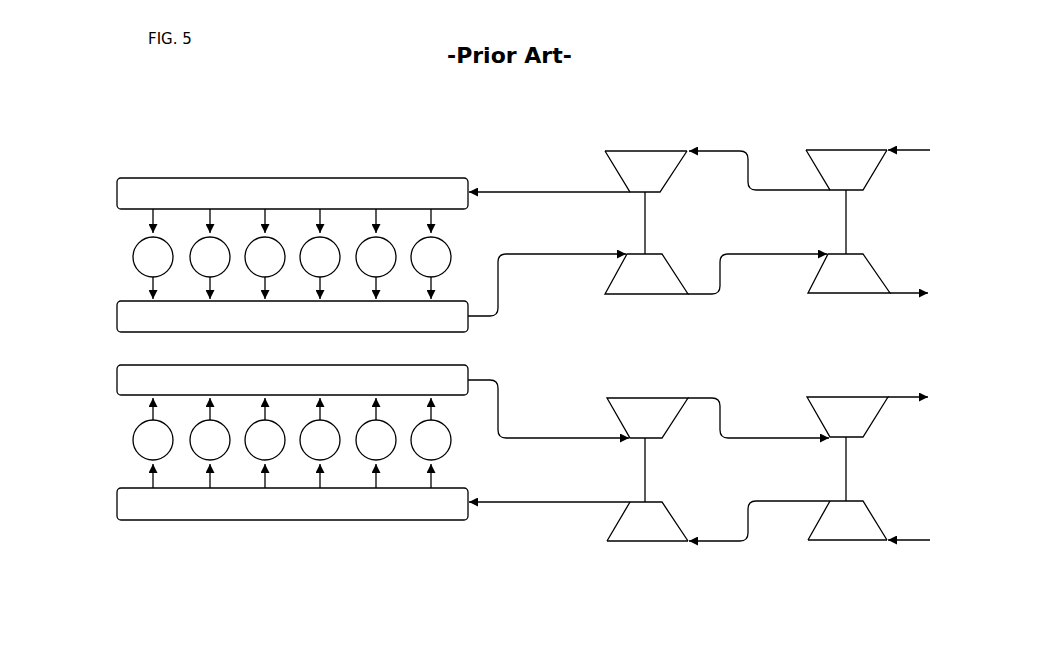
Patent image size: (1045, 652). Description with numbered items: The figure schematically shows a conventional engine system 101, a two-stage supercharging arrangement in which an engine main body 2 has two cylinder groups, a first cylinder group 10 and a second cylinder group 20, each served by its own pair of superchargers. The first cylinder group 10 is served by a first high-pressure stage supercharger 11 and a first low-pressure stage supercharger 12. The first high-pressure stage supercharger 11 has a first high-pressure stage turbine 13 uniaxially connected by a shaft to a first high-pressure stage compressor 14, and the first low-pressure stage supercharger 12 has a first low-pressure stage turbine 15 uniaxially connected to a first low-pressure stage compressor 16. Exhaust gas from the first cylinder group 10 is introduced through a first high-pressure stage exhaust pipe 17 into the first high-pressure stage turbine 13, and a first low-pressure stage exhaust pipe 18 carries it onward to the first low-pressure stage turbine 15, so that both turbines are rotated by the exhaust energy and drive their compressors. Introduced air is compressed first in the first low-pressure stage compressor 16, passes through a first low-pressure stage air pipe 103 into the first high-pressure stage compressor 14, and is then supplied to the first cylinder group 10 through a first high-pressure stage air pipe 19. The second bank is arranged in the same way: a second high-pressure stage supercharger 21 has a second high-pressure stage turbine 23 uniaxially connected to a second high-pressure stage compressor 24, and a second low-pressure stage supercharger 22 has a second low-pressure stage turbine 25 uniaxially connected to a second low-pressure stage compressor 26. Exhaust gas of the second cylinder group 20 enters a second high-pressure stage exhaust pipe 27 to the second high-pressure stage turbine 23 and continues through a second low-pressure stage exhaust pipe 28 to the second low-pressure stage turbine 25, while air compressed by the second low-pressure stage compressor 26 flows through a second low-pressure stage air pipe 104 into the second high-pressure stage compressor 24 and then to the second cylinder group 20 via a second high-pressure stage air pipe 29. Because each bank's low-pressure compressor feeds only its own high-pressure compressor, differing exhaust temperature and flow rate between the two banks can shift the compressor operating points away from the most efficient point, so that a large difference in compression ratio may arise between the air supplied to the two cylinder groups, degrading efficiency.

The conventional engine system 101 is at (86, 112).
The engine main body 2 is at (359, 151).
The first cylinder group 10 is at (109, 187).
The second cylinder group 20 is at (109, 385).
The first high-pressure stage supercharger 11 is at (666, 142).
The first low-pressure stage supercharger 12 is at (871, 141).
The first high-pressure stage turbine 13 is at (663, 296).
The first low-pressure stage turbine 15 is at (865, 294).
The first high-pressure stage compressor 14 is at (621, 149).
The first low-pressure stage compressor 16 is at (822, 148).
The first high-pressure stage exhaust pipe 17 is at (505, 288).
The first low-pressure stage exhaust pipe 18 is at (765, 256).
The first high-pressure stage air pipe 19 is at (501, 186).
The first low-pressure stage air pipe 103 is at (728, 150).
The second high-pressure stage supercharger 21 is at (673, 549).
The second low-pressure stage supercharger 22 is at (877, 548).
The second high-pressure stage turbine 23 is at (632, 397).
The second low-pressure stage turbine 25 is at (834, 396).
The second high-pressure stage compressor 24 is at (623, 542).
The second low-pressure stage compressor 26 is at (828, 542).
The second high-pressure stage exhaust pipe 27 is at (507, 412).
The second low-pressure stage exhaust pipe 28 is at (760, 436).
The second high-pressure stage air pipe 29 is at (512, 506).
The second low-pressure stage air pipe 104 is at (727, 545).